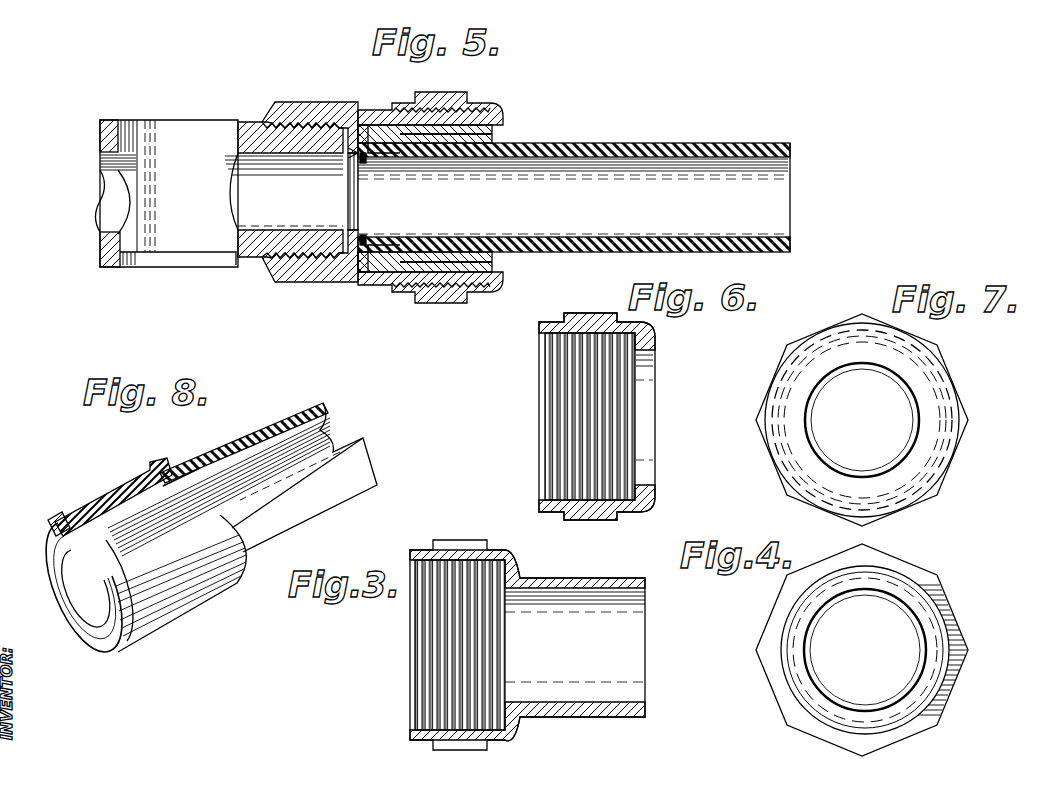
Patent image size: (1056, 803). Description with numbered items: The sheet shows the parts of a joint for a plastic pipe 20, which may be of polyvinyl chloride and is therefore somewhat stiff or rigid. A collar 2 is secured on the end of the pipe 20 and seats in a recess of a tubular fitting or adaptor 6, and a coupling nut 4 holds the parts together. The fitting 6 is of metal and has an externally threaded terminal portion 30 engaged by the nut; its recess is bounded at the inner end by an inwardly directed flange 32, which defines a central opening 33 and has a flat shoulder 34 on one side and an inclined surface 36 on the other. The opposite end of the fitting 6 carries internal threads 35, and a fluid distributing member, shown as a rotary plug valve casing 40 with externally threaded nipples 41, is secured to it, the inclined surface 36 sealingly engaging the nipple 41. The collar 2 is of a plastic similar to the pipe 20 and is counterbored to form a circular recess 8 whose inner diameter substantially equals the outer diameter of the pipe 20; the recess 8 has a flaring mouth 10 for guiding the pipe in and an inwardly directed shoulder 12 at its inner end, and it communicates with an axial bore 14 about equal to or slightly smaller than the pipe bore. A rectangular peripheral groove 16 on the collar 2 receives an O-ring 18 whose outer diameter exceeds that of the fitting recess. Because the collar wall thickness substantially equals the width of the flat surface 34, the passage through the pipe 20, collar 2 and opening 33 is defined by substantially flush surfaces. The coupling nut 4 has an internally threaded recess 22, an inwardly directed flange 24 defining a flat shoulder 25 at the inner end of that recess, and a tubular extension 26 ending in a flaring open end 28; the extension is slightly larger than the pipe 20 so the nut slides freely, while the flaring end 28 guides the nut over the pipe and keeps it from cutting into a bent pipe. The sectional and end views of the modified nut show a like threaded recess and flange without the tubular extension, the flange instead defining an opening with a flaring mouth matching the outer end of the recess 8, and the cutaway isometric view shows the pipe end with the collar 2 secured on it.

In FIG. 5, the collar 2 is at (441, 201).
In FIG. 8, the collar 2 is at (118, 490).
In FIG. 3, the coupling nut 4 is at (526, 629).
In FIG. 4, the coupling nut 4 is at (843, 646).
In FIG. 5, the tubular fitting 6 is at (310, 201).
In FIG. 5, the circular recess 8 is at (456, 152).
In FIG. 8, the circular recess 8 is at (150, 475).
In FIG. 5, the flaring mouth 10 is at (490, 150).
In FIG. 8, the flaring mouth 10 is at (175, 478).
In FIG. 5, the shoulder 12 is at (407, 160).
In FIG. 8, the shoulder 12 is at (135, 542).
In FIG. 5, the axial bore 14 is at (365, 160).
In FIG. 8, the axial bore 14 is at (80, 578).
In FIG. 5, the peripheral groove 16 is at (363, 126).
In FIG. 8, the peripheral groove 16 is at (66, 518).
In FIG. 5, the O-ring 18 is at (395, 247).
In FIG. 5, the plastic pipe 20 is at (740, 144).
In FIG. 8, the plastic pipe 20 is at (254, 434).
In FIG. 3, the internally threaded recess 22 is at (430, 720).
In FIG. 3, the flange 24 is at (520, 562).
In FIG. 4, the flange 24 is at (790, 675).
In FIG. 3, the shoulder 25 is at (500, 582).
In FIG. 3, the tubular extension 26 is at (602, 578).
In FIG. 3, the flaring open end 28 is at (645, 590).
In FIG. 5, the terminal portion 30 is at (352, 282).
In FIG. 5, the flange 32 is at (352, 118).
In FIG. 5, the central opening 33 is at (351, 172).
In FIG. 5, the flat surface 34 is at (375, 222).
In FIG. 5, the internal threads 35 is at (300, 270).
In FIG. 5, the inclined surface 36 is at (348, 152).
In FIG. 5, the rotary plug valve casing 40 is at (108, 265).
In FIG. 5, the externally threaded nipple 41 is at (258, 135).